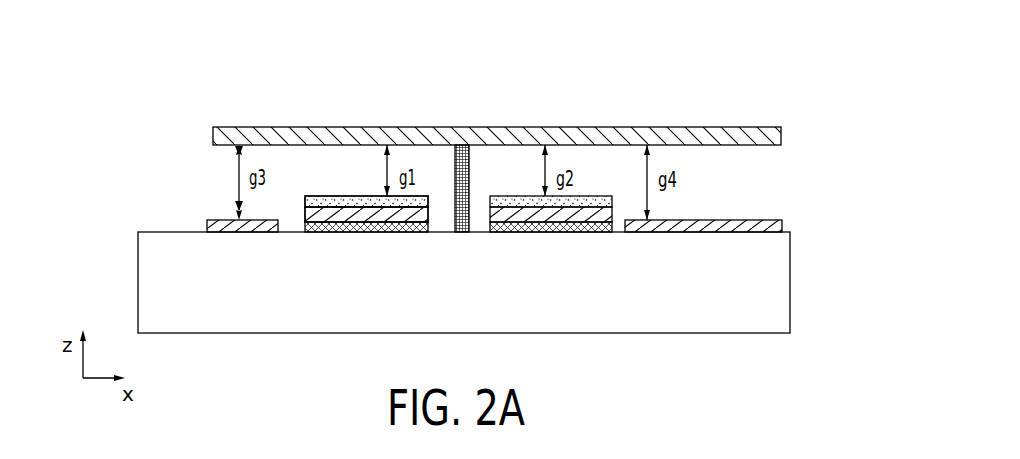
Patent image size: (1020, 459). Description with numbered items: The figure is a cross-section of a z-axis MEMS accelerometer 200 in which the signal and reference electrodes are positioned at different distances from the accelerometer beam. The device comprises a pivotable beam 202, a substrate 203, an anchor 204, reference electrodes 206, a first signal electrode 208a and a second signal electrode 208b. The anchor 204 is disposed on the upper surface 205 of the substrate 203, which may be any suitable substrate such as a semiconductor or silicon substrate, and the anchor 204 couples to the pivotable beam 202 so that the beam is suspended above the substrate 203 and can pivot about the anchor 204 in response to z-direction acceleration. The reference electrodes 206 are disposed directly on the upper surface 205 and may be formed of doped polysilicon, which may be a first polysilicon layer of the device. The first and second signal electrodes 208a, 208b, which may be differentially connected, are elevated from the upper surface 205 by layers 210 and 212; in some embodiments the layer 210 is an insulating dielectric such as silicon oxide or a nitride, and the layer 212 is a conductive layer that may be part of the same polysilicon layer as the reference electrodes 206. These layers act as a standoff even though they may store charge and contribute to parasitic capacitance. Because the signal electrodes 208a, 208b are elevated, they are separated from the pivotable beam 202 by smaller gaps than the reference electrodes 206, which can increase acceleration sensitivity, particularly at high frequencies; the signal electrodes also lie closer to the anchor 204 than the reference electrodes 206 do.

The z-axis MEMS accelerometer 200 is at (640, 80).
The pivotable beam 202 is at (213, 130).
The substrate 203 is at (464, 282).
The anchor 204 is at (463, 144).
The upper surface 205 is at (128, 227).
The reference electrodes 206 is at (208, 228).
The first signal electrode 208a is at (357, 200).
The second signal electrode 208b is at (508, 203).
The layer 210 is at (347, 212).
The layer 212 is at (310, 202).